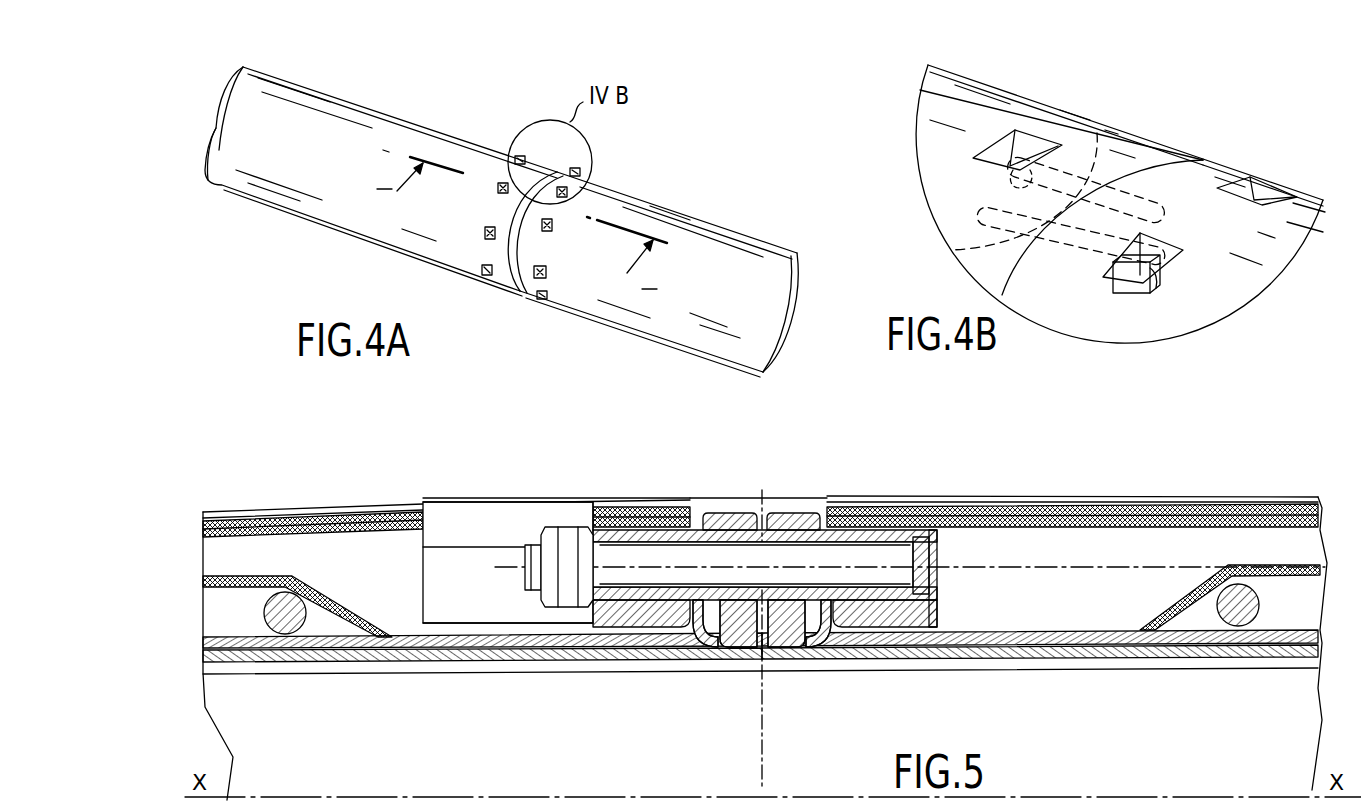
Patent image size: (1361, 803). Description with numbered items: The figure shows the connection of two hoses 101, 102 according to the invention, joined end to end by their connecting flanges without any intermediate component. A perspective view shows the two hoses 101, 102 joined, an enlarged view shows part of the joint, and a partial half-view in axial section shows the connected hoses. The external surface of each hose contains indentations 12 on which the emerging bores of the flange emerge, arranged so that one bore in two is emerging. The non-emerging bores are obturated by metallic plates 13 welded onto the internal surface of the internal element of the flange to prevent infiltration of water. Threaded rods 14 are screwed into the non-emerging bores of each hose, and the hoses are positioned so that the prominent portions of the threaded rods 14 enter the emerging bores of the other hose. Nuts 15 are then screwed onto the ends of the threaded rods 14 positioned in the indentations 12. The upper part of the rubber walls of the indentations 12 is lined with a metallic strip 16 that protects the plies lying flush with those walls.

In FIG. 4A, the indentations 12 is at (484, 234).
In FIG. 4B, the indentations 12 is at (1032, 143).
In FIG. 5, the indentations 12 is at (483, 570).
In FIG. 5, the metallic plates 13 is at (931, 548).
In FIG. 4B, the threaded rods 14 is at (1097, 133).
In FIG. 5, the threaded rods 14 is at (643, 555).
In FIG. 4B, the nuts 15 is at (1007, 168).
In FIG. 5, the nuts 15 is at (563, 532).
In FIG. 5, the metallic strip 16 is at (447, 522).
In FIG. 4A, the hose 101 is at (418, 124).
In FIG. 4B, the hose 101 is at (948, 118).
In FIG. 5, the hose 101 is at (348, 502).
In FIG. 4A, the hose 102 is at (693, 219).
In FIG. 4B, the hose 102 is at (1220, 165).
In FIG. 5, the hose 102 is at (1062, 492).